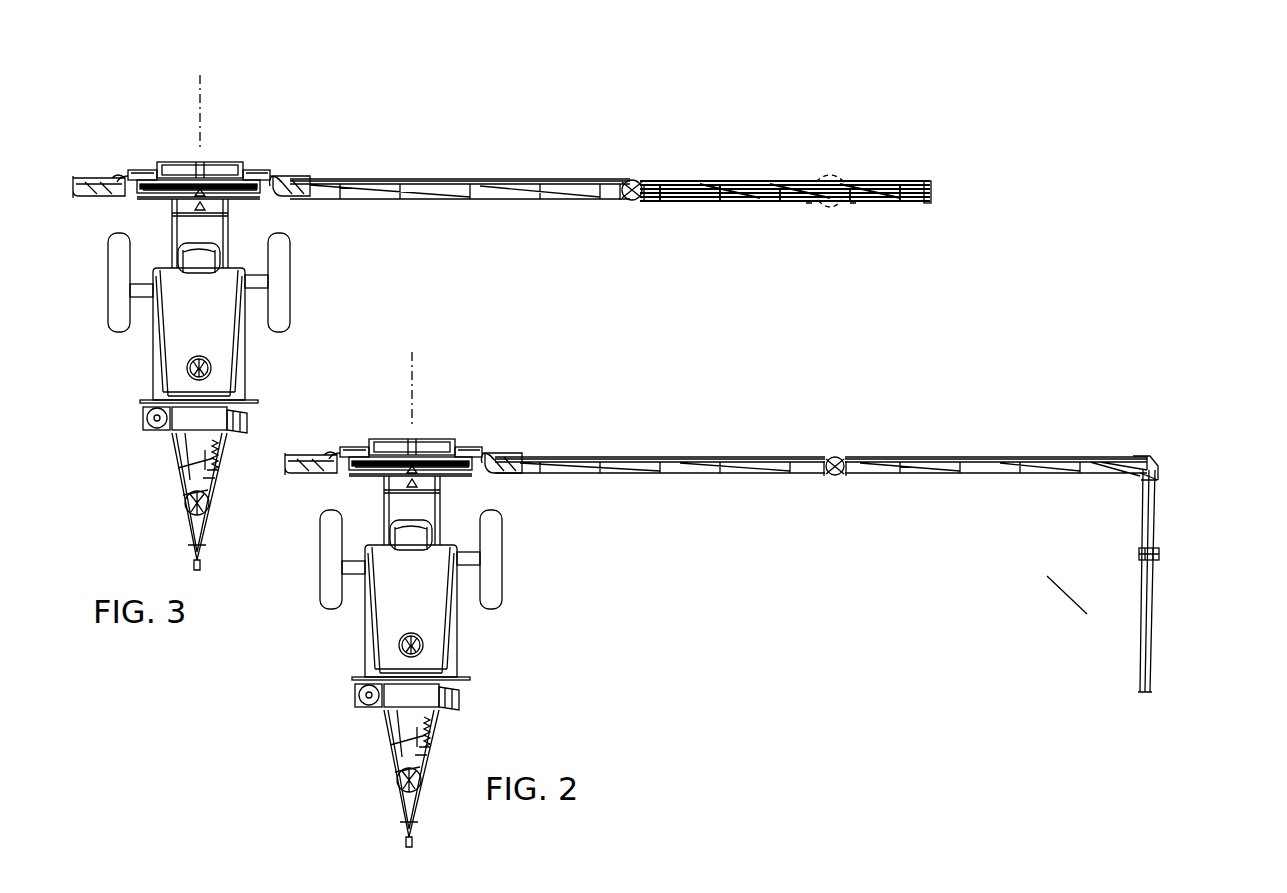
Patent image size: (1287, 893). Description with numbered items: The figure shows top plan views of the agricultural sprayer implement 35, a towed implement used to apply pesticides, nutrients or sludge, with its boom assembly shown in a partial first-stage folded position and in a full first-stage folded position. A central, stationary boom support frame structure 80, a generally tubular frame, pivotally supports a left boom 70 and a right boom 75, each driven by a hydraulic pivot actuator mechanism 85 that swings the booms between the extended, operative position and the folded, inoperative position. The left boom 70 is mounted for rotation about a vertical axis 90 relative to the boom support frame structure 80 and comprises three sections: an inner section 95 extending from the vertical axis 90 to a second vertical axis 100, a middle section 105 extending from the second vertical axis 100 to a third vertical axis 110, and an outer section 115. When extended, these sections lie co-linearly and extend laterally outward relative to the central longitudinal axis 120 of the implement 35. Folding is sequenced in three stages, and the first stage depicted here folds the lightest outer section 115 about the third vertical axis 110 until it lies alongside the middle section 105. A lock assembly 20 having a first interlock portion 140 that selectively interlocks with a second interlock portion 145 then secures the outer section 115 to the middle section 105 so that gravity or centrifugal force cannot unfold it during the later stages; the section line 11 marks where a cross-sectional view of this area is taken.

In FIG. 3, the section line 11- 11 is at (808, 206).
In FIG. 3, the lock assembly 20 is at (831, 169).
In FIG. 2, the lock assembly 20 is at (1057, 604).
In FIG. 3, the agricultural sprayer implement 35 is at (291, 391).
In FIG. 2, the agricultural sprayer implement 35 is at (463, 661).
In FIG. 3, the left boom 70 is at (630, 121).
In FIG. 2, the left boom 70 is at (693, 374).
In FIG. 3, the right boom 75 is at (92, 167).
In FIG. 2, the right boom 75 is at (317, 444).
In FIG. 3, the boom support frame structure 80 is at (233, 147).
In FIG. 2, the boom support frame structure 80 is at (419, 430).
In FIG. 3, the pivot actuator mechanism 85 is at (263, 154).
In FIG. 2, the pivot actuator mechanism 85 is at (444, 414).
In FIG. 3, the vertical axis 90 is at (289, 171).
In FIG. 2, the vertical axis 90 is at (525, 442).
In FIG. 3, the inner section 95 is at (425, 207).
In FIG. 2, the inner section 95 is at (655, 487).
In FIG. 3, the second vertical axis 100 is at (634, 173).
In FIG. 2, the second vertical axis 100 is at (843, 452).
In FIG. 2, the middle section 105 is at (964, 485).
In FIG. 3, the third vertical axis 110 is at (934, 179).
In FIG. 2, the third vertical axis 110 is at (1147, 455).
In FIG. 2, the outer section 115 is at (1168, 596).
In FIG. 3, the central longitudinal axis 120 is at (203, 93).
In FIG. 2, the central longitudinal axis 120 is at (444, 380).
In FIG. 2, the first interlock portion 140 is at (1137, 555).
In FIG. 2, the second interlock portion 145 is at (1045, 472).